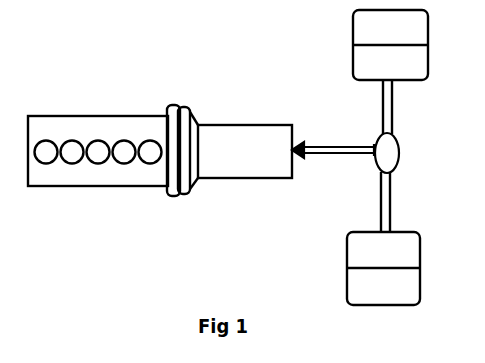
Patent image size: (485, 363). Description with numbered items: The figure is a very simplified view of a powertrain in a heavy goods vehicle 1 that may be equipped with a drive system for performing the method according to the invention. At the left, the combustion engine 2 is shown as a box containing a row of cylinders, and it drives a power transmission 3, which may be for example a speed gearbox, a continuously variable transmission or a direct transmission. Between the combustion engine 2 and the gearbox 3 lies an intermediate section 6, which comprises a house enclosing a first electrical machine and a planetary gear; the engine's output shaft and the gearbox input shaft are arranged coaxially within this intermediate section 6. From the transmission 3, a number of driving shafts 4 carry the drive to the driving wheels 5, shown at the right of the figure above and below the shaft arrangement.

The heavy goods vehicle 1 is at (130, 75).
The combustion engine 2 is at (85, 184).
The power transmission 3 is at (253, 160).
The driving shafts 4 is at (330, 143).
The driving wheels 5 is at (412, 60).
The intermediate section 6 is at (175, 148).